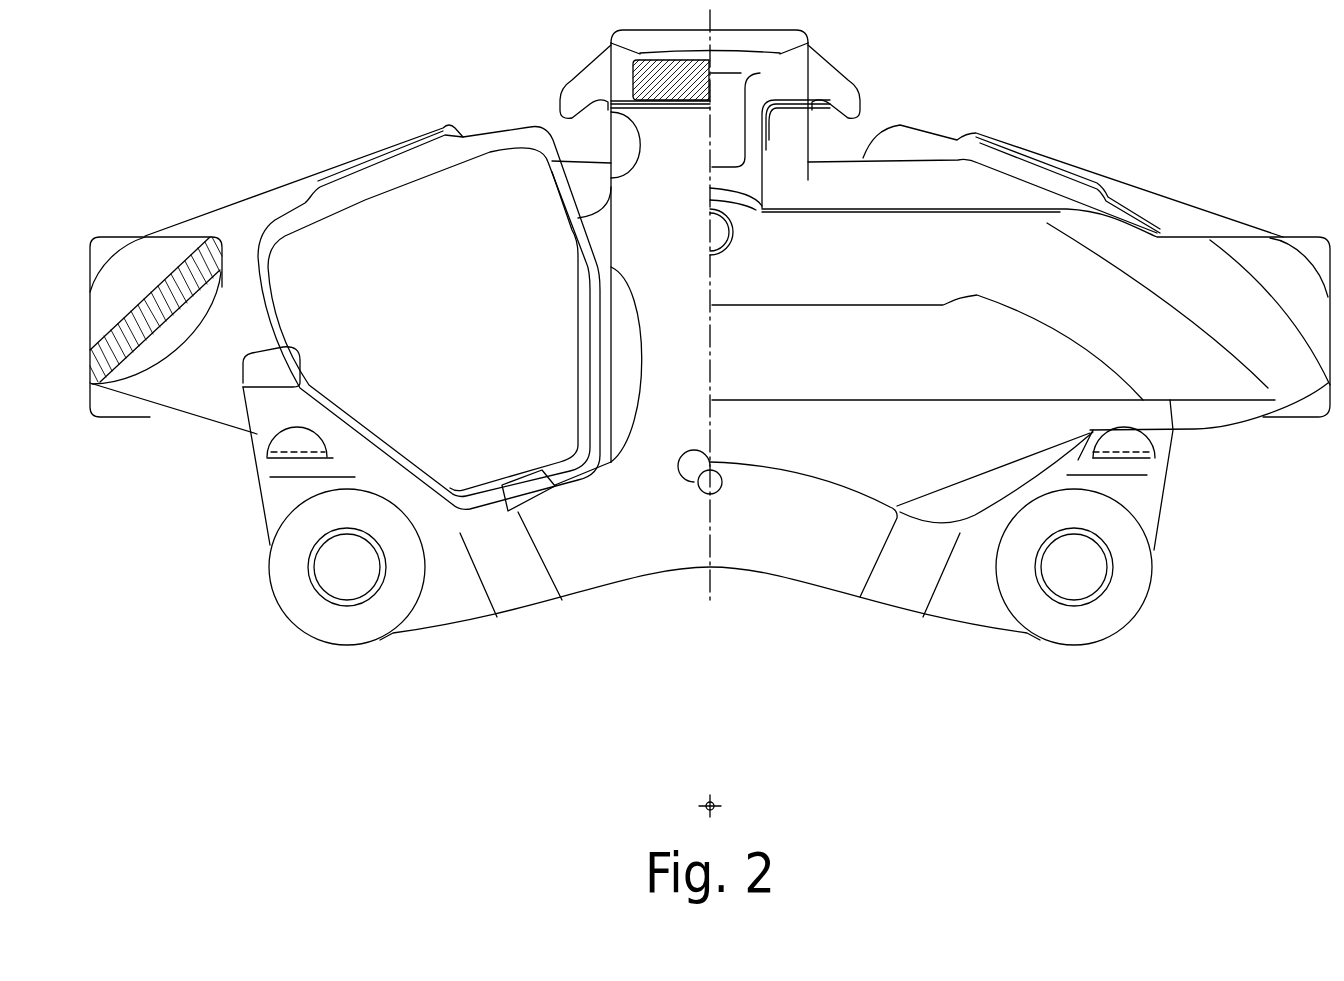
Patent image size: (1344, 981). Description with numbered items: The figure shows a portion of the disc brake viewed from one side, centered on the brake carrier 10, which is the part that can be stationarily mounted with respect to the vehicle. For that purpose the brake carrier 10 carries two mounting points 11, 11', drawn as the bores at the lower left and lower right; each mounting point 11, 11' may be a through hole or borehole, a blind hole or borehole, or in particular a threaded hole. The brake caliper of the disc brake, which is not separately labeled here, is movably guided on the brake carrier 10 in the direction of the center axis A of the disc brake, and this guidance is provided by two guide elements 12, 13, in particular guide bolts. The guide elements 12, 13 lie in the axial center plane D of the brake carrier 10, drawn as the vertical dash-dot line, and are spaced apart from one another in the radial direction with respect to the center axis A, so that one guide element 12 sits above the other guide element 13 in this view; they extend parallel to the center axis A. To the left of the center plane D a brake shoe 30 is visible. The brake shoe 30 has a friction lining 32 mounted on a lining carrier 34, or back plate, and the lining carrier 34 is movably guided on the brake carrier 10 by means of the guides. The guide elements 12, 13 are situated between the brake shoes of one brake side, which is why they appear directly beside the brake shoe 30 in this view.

The brake carrier 10 is at (778, 553).
The mounting point 11 is at (304, 517).
The mounting point 11' is at (1070, 544).
The guide element 12 is at (723, 227).
The guide element 13 is at (727, 486).
The brake shoe 30 is at (348, 166).
The friction lining 32 is at (471, 327).
The lining carrier 34 is at (467, 147).
The axial center plane D is at (710, 583).
The center axis A is at (716, 804).